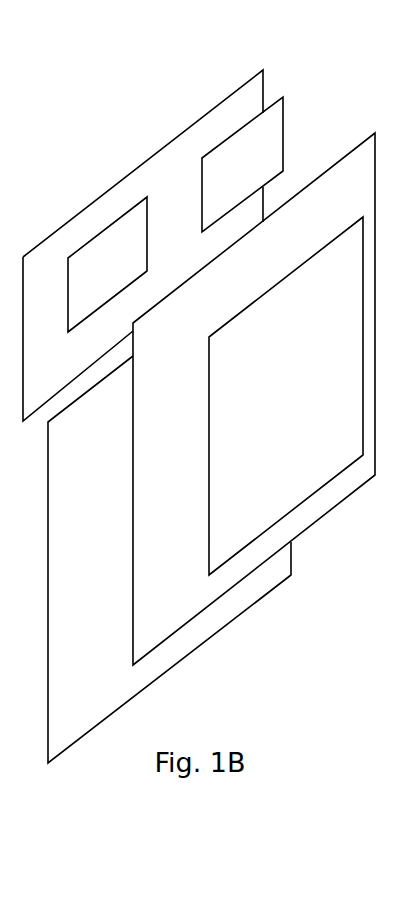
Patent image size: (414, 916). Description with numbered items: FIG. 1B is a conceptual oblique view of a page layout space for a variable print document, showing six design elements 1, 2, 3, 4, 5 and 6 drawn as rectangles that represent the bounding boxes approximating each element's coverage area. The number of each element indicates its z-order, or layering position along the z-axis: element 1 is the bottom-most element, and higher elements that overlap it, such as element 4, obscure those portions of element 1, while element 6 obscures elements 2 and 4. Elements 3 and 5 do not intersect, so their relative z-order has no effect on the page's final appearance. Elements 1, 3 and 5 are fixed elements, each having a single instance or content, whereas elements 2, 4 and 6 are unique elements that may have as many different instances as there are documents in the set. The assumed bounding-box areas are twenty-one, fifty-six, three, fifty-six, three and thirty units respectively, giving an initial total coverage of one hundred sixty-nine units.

The design element 1 is at (142, 245).
The design element 2 is at (169, 559).
The design element 3 is at (107, 264).
The design element 4 is at (254, 399).
The design element 5 is at (242, 164).
The design element 6 is at (286, 396).